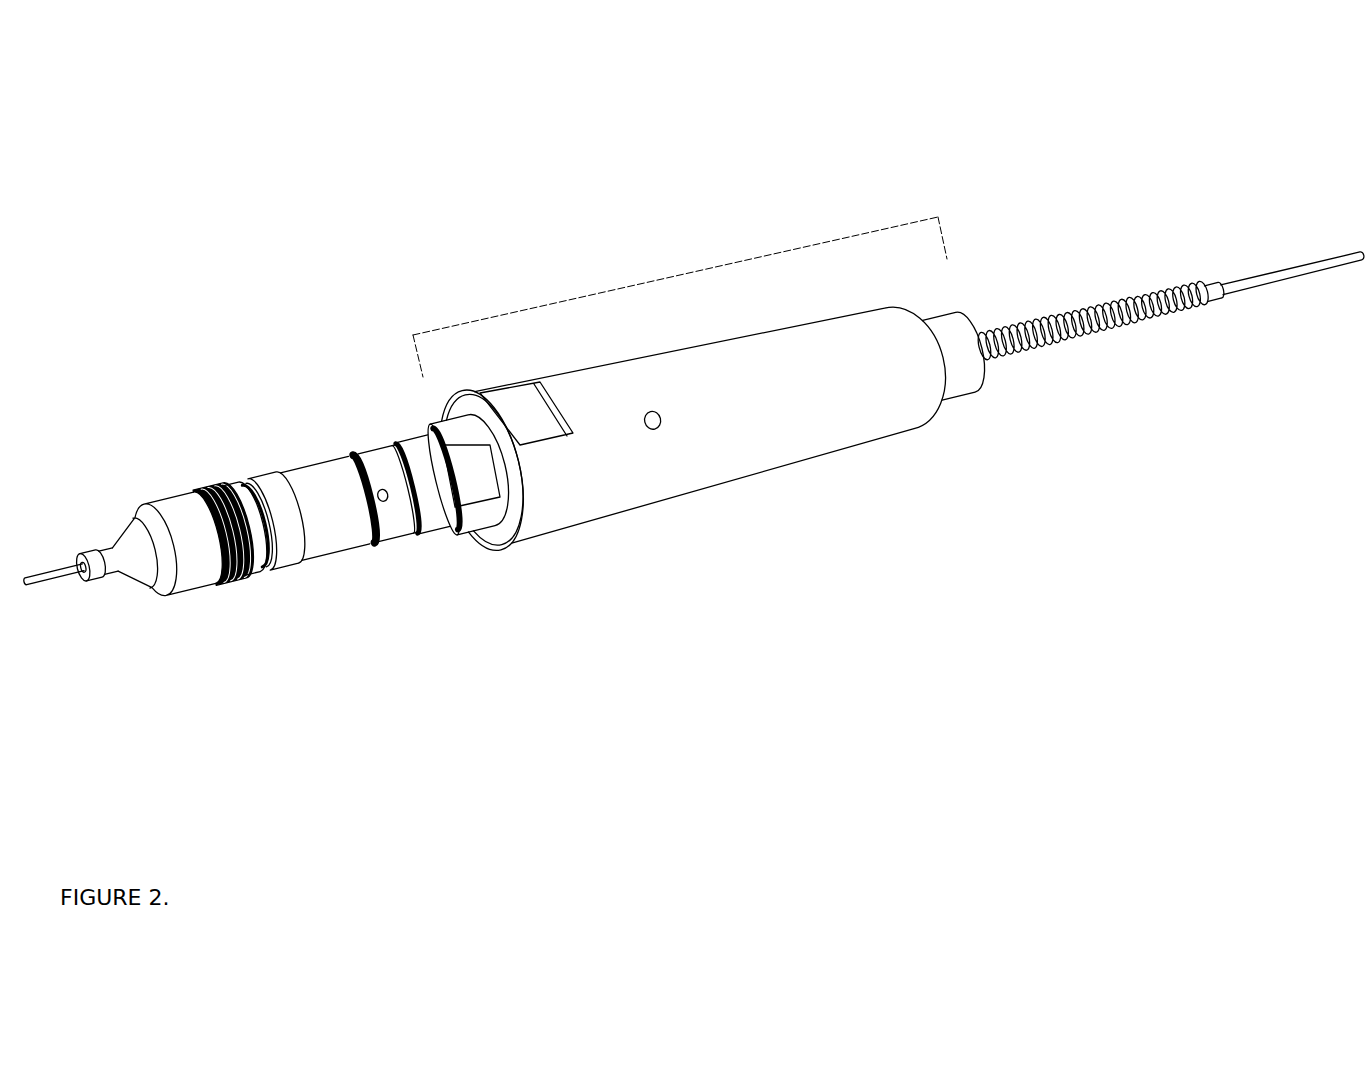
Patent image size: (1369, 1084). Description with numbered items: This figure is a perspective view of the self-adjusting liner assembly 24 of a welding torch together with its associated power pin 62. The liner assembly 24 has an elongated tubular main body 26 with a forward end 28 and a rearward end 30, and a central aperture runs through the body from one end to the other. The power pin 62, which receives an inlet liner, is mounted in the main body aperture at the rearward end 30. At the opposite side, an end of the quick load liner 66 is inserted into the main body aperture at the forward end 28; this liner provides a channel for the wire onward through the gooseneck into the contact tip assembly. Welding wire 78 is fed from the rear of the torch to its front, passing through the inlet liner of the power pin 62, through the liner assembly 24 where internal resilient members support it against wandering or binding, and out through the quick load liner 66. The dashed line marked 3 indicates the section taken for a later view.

The self-adjusting liner assembly 24 is at (638, 217).
The elongated tubular main body 26 is at (742, 481).
The forward end 28 is at (975, 393).
The rearward end 30 is at (505, 548).
The power pin 62 is at (350, 453).
The quick load liner 66 is at (1083, 305).
The welding wire 78 is at (1275, 268).
The section line (FIG. 3) 3 is at (683, 297).